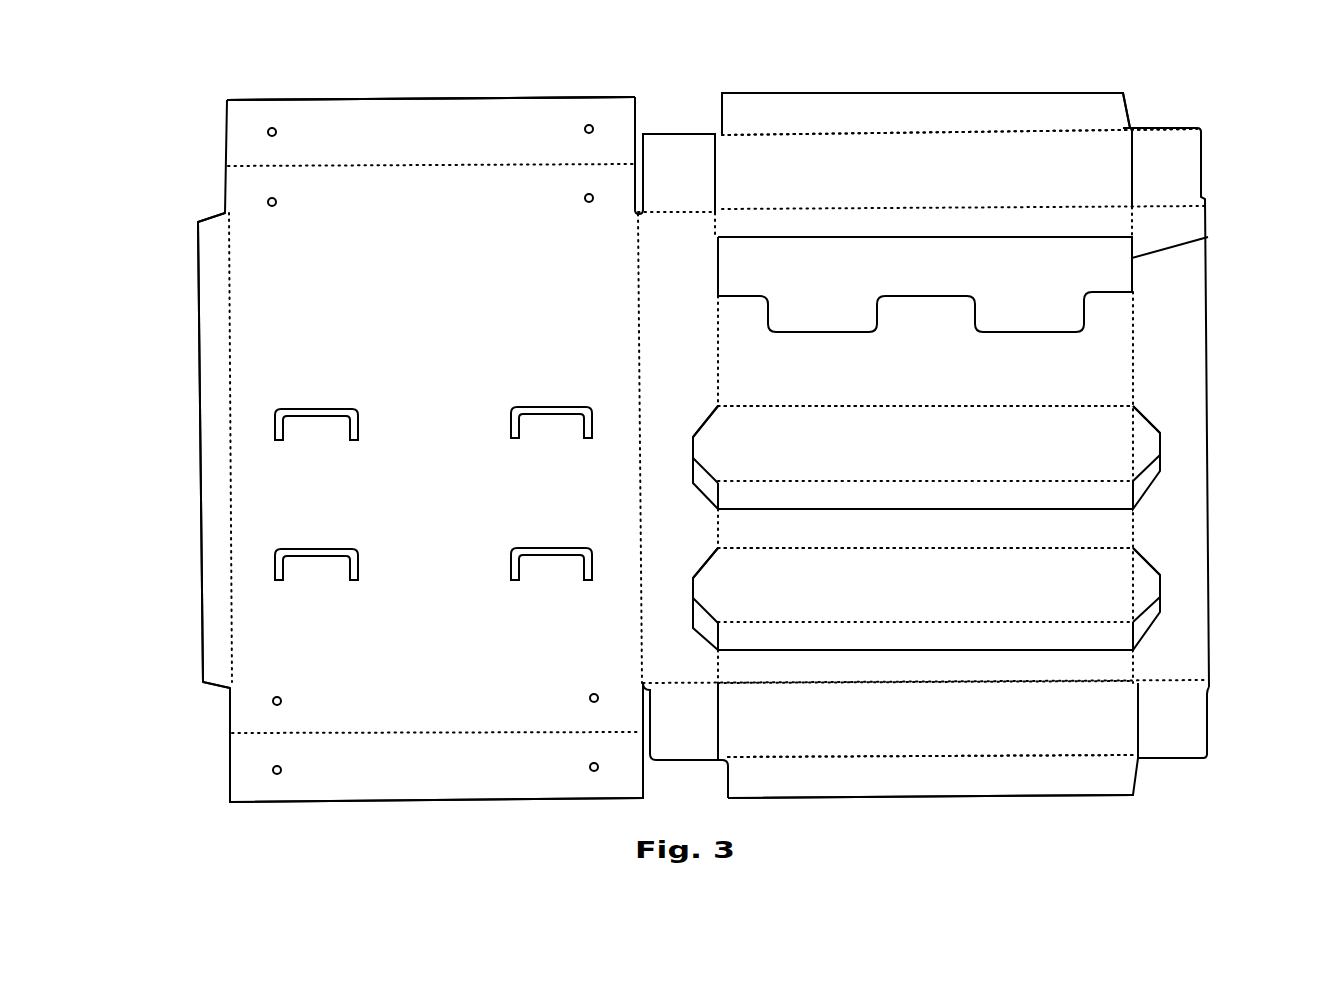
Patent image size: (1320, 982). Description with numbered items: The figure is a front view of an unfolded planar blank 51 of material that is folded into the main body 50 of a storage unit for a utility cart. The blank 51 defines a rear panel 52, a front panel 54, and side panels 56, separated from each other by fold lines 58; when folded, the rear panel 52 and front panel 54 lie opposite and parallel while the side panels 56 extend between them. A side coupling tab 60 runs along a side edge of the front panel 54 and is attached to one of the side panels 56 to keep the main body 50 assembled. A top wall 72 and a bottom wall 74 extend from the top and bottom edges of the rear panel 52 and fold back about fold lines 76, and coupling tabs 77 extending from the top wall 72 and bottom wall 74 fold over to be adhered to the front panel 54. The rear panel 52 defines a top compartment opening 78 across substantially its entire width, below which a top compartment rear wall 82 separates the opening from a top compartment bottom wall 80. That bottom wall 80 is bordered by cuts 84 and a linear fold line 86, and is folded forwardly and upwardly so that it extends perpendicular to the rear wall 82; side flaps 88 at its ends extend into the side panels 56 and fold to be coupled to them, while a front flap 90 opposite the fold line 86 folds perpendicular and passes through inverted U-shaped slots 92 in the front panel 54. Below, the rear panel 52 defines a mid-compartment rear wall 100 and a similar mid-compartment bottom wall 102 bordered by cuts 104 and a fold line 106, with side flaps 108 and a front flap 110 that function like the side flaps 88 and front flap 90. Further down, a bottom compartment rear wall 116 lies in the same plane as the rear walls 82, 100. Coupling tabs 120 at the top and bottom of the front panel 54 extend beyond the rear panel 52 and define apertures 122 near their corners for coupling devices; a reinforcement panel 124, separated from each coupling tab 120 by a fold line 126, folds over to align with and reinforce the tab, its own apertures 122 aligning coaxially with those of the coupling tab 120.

The main body 50 is at (210, 84).
The planar blank 51 is at (1128, 110).
The rear panel 52 is at (1110, 355).
The front panel 54 is at (240, 302).
The side panels 56 is at (680, 237).
The fold lines 58 is at (638, 250).
The side coupling tab 60 is at (217, 455).
The top wall 72 is at (992, 172).
The bottom wall 74 is at (928, 732).
The fold lines 76 is at (1103, 203).
The top and bottom coupling tabs 77 is at (862, 120).
The top compartment opening 78 is at (1105, 290).
The top compartment bottom wall 80 is at (1110, 447).
The top compartment rear wall 82 is at (802, 350).
The cuts 84 is at (1162, 464).
The fold line 86 is at (1120, 402).
The side flaps 88 is at (1135, 415).
The front flap 90 is at (1100, 495).
The slots 92 is at (293, 408).
The mid-compartment rear wall 100 is at (1123, 530).
The mid-compartment bottom wall 102 is at (1140, 600).
The cuts 104 is at (760, 652).
The fold line 106 is at (1123, 562).
The side flaps 108 is at (1143, 598).
The front flap 110 is at (1112, 642).
The bottom compartment rear wall 116 is at (1105, 670).
The coupling tabs 120 is at (238, 192).
The apertures 122 is at (270, 196).
The reinforcement panel 124 is at (440, 135).
The fold line 126 is at (340, 165).